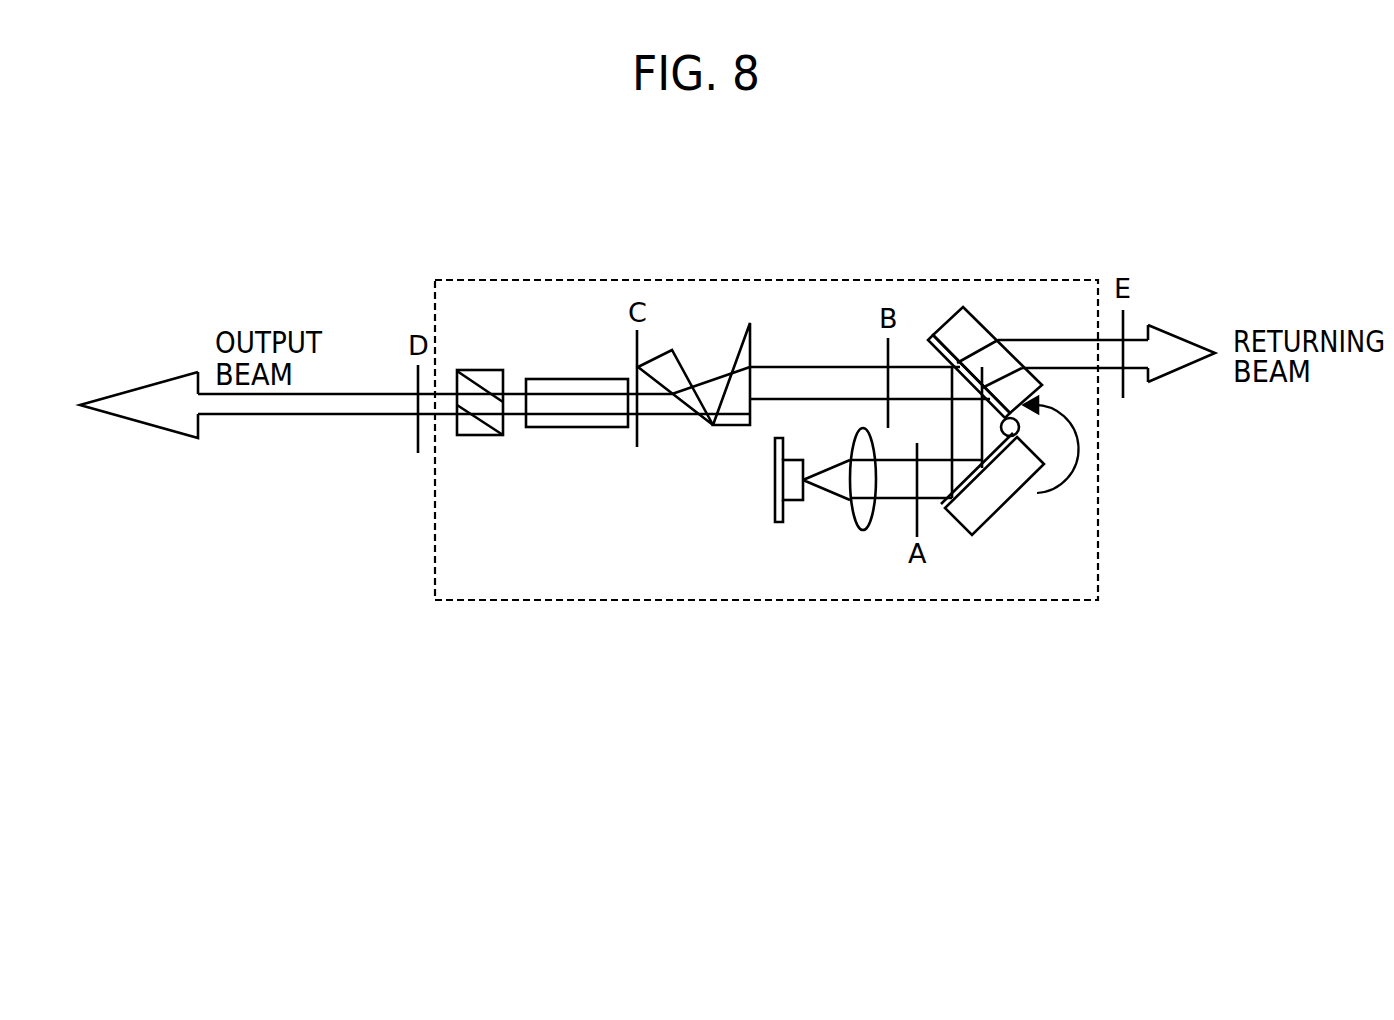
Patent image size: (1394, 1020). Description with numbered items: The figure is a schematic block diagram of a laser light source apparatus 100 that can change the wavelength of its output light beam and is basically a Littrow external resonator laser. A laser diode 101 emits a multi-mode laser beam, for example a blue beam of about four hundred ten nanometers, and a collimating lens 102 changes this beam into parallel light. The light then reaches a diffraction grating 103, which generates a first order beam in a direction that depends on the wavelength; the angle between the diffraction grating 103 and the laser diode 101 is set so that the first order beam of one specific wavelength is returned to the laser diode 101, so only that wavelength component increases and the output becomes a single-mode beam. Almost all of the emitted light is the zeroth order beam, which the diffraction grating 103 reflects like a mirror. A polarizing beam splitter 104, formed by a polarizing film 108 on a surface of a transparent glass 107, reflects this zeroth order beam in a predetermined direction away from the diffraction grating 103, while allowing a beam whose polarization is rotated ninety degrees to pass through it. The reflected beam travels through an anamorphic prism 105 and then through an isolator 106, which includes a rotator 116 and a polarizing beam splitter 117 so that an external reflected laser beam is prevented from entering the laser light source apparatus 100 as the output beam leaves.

The laser light source apparatus 100 is at (810, 250).
The laser diode 101 is at (780, 522).
The collimating lens 102 is at (863, 530).
The diffraction grating 103 is at (1013, 510).
The polarizing beam splitter 104 is at (986, 347).
The anamorphic prism 105 is at (750, 323).
The isolator 106 is at (599, 355).
The transparent glass 107 is at (963, 307).
The polarizing film 108 is at (930, 336).
The rotator 116 is at (578, 379).
The polarizing beam splitter 117 is at (480, 369).